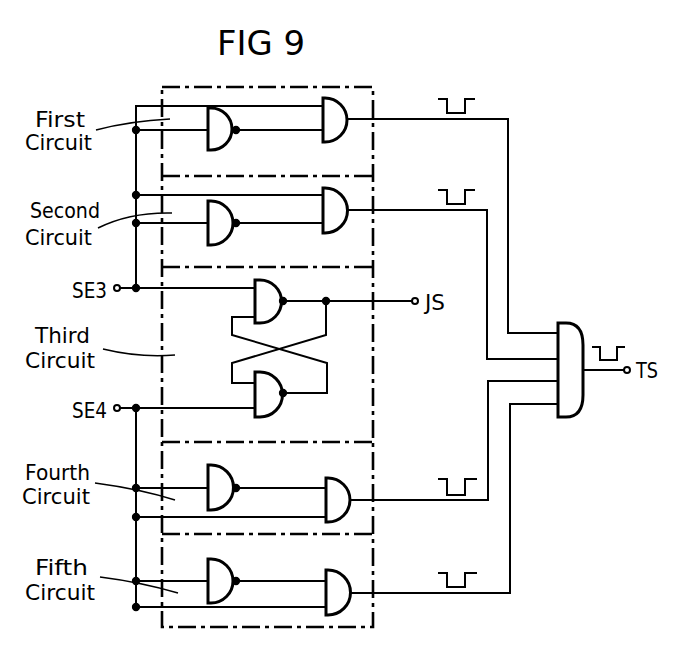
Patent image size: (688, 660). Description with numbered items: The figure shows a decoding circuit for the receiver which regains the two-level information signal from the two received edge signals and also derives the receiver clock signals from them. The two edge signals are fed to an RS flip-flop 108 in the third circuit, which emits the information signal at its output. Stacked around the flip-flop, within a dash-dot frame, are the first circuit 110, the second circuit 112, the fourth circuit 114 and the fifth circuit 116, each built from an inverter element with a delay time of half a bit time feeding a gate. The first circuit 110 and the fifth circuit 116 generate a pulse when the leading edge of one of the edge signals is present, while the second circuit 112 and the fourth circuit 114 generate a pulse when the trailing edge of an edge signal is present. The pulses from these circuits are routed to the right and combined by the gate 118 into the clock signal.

The first circuit 110 is at (373, 102).
The second circuit 112 is at (373, 194).
The RS flip-flop 108 is at (373, 372).
The fourth circuit 114 is at (373, 463).
The fifth circuit 116 is at (373, 612).
The gate 118 is at (590, 355).